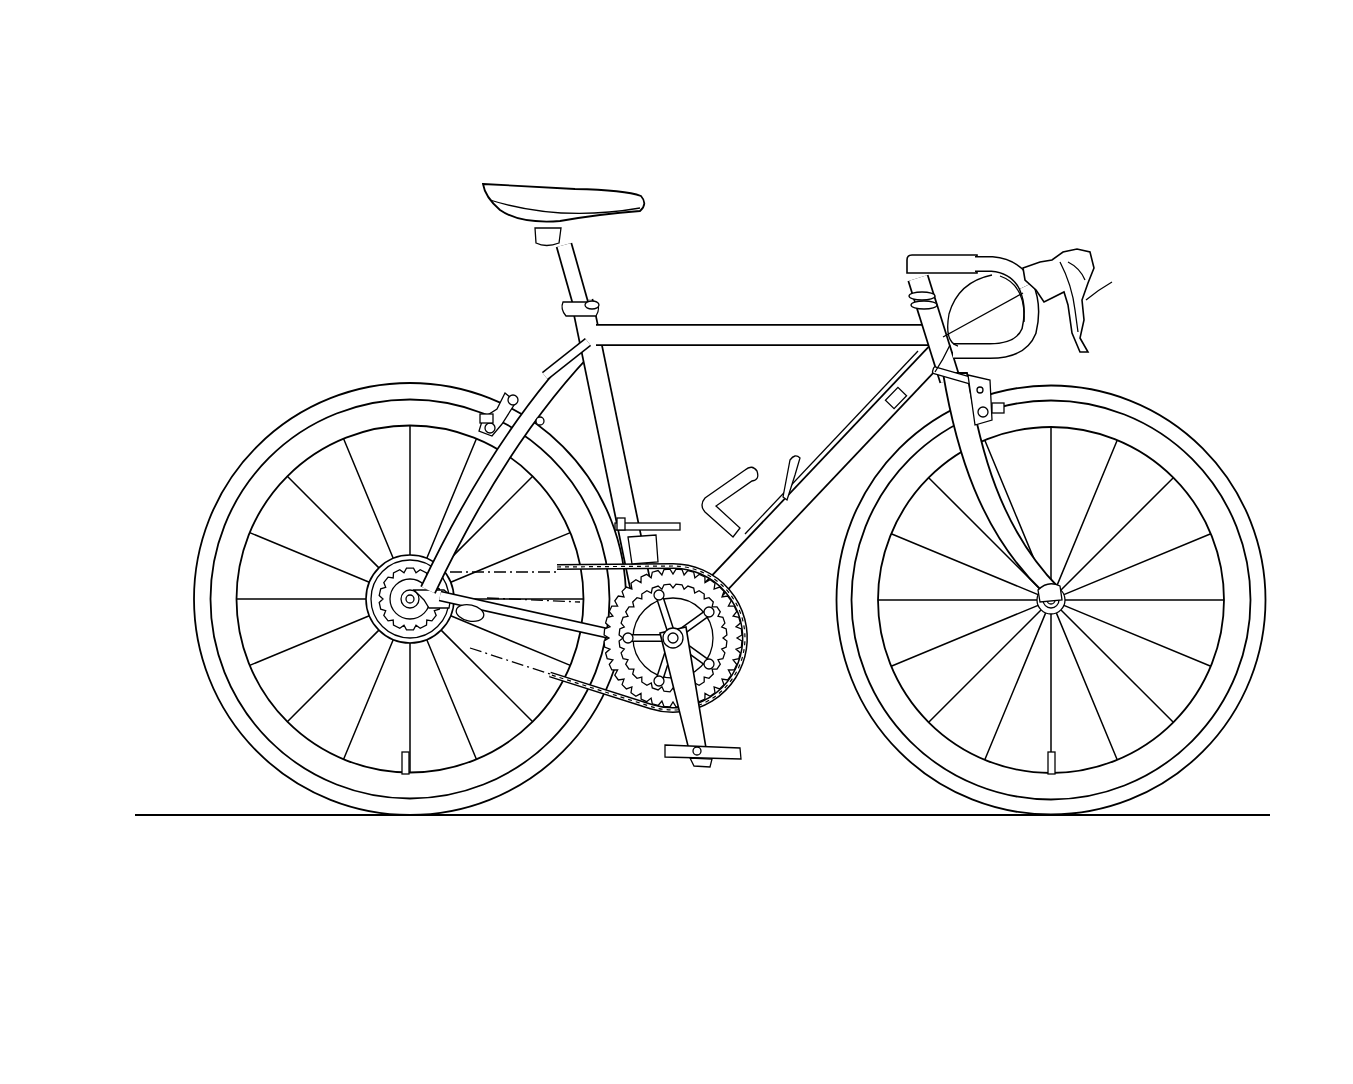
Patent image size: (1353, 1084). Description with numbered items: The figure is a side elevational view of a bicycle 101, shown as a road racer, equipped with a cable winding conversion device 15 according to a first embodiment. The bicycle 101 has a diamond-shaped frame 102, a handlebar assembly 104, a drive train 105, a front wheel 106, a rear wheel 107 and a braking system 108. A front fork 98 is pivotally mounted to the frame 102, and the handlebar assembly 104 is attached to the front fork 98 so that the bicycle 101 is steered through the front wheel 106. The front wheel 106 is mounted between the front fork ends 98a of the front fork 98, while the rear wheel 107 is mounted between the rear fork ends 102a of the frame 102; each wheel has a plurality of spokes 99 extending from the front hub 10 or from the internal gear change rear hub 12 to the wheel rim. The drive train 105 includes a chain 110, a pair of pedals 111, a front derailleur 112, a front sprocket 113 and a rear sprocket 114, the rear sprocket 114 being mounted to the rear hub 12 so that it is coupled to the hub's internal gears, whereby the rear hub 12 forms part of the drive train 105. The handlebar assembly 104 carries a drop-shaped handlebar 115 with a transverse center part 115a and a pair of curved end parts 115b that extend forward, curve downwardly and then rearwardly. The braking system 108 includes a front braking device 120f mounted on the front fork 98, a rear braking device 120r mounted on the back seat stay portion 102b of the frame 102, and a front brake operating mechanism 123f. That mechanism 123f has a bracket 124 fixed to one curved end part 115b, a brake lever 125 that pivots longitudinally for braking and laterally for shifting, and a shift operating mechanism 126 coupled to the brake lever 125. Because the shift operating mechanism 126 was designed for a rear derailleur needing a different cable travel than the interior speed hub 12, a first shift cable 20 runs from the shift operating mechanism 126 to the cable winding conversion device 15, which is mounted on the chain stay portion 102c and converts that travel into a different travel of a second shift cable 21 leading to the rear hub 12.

The bicycle 101 is at (817, 207).
The frame 102 is at (717, 323).
The rear fork ends 102a is at (292, 685).
The back seat stay portion 102b is at (556, 356).
The chain stay portion 102c is at (455, 598).
The handlebar assembly 104 is at (899, 266).
The drive train 105 is at (757, 678).
The front wheel 106 is at (1215, 455).
The rear wheel 107 is at (378, 385).
The braking system 108 is at (1127, 250).
The chain 110 is at (382, 606).
The pedals 111 is at (692, 762).
The front derailleur 112 is at (653, 530).
The front sprocket 113 is at (740, 600).
The rear sprocket 114 is at (382, 582).
The handlebar 115 is at (933, 240).
The transverse center part 115a is at (960, 260).
The curved end parts 115b is at (912, 323).
The front braking device 120f is at (933, 371).
The rear braking device 120r is at (497, 393).
The front brake operating mechanism 123f is at (1120, 257).
The bracket 124 is at (1100, 253).
The brake lever 125 is at (1092, 285).
The shift operating mechanism 126 is at (1082, 320).
The front fork 98 is at (1062, 565).
The front fork ends 98a is at (960, 705).
The spokes 99 is at (320, 503).
The front hub 10 is at (1075, 548).
The internal gear change rear hub 12 is at (366, 645).
The cable winding conversion device 15 is at (475, 620).
The first shift cable 20 is at (827, 477).
The second shift cable 21 is at (395, 590).